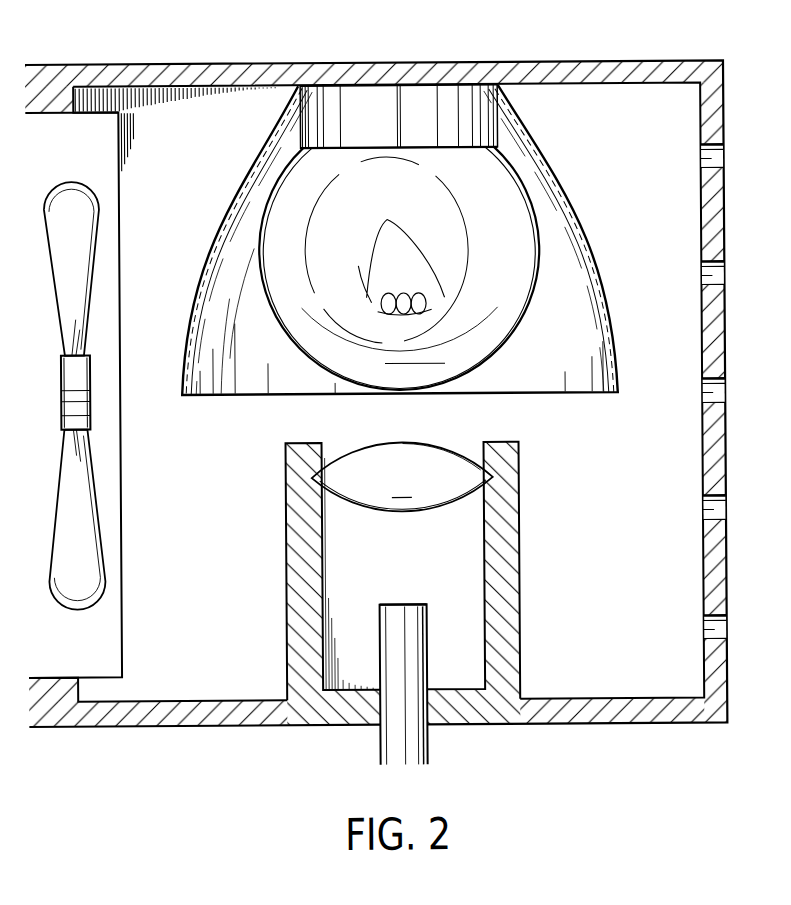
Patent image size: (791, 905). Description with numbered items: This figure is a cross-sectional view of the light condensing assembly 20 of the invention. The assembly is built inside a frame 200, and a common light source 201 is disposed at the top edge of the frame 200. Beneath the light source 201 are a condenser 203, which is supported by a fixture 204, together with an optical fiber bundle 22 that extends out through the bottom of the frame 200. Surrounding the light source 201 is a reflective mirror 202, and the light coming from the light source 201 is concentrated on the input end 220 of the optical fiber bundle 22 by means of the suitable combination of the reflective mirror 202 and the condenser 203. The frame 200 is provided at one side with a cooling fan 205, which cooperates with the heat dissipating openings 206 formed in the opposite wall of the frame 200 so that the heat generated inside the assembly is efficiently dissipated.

The light condensing assembly 20 is at (280, 60).
The frame 200 is at (591, 73).
The light source 201 is at (499, 337).
The reflective mirror 202 is at (591, 239).
The condenser 203 is at (435, 457).
The fixture 204 is at (512, 570).
The cooling fan 205 is at (83, 567).
The heat dissipating openings 206 is at (700, 406).
The input end 220 is at (394, 606).
The optical fiber bundle 22 is at (418, 666).